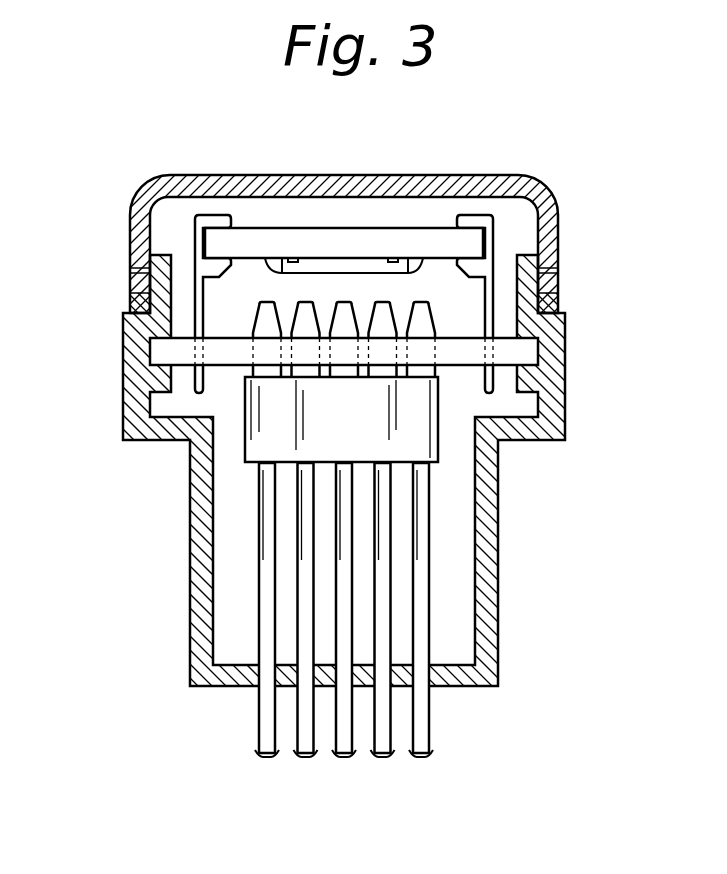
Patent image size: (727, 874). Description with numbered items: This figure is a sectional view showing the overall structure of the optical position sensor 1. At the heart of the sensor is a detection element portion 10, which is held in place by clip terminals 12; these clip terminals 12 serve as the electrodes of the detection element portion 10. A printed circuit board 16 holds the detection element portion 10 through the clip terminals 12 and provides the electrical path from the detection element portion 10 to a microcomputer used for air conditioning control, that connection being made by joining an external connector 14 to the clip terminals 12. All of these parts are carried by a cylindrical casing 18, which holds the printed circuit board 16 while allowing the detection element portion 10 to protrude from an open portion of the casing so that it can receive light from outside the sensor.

The optical semiconductor device package 1 is at (496, 160).
The substrate 10 is at (375, 220).
The clip sleeve 12 is at (193, 222).
The header block 14 is at (415, 445).
The plate 16 is at (523, 349).
The base body 18 is at (487, 587).